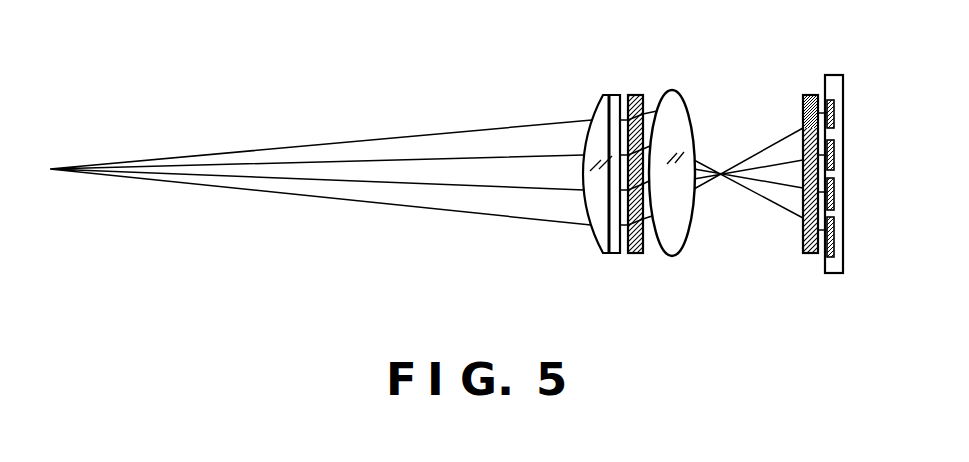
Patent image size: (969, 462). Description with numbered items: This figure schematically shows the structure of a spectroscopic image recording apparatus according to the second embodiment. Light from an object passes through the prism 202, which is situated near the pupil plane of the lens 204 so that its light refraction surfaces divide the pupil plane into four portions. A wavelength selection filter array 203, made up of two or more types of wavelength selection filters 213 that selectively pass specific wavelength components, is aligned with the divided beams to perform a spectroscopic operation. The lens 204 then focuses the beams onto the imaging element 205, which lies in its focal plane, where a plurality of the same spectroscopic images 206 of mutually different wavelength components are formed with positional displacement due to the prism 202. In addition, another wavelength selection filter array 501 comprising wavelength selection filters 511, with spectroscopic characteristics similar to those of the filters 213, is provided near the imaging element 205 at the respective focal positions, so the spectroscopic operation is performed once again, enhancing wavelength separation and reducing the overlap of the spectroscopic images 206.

The prism 202 is at (604, 96).
The wavelength selection filter array 203 is at (632, 95).
The wavelength selection filters 213 is at (633, 254).
The lens 204 is at (675, 252).
The wavelength selection filter array 501 is at (804, 95).
The wavelength selection filters 511 is at (804, 250).
The imaging element 205 is at (836, 68).
The spectroscopic images 206 is at (833, 274).